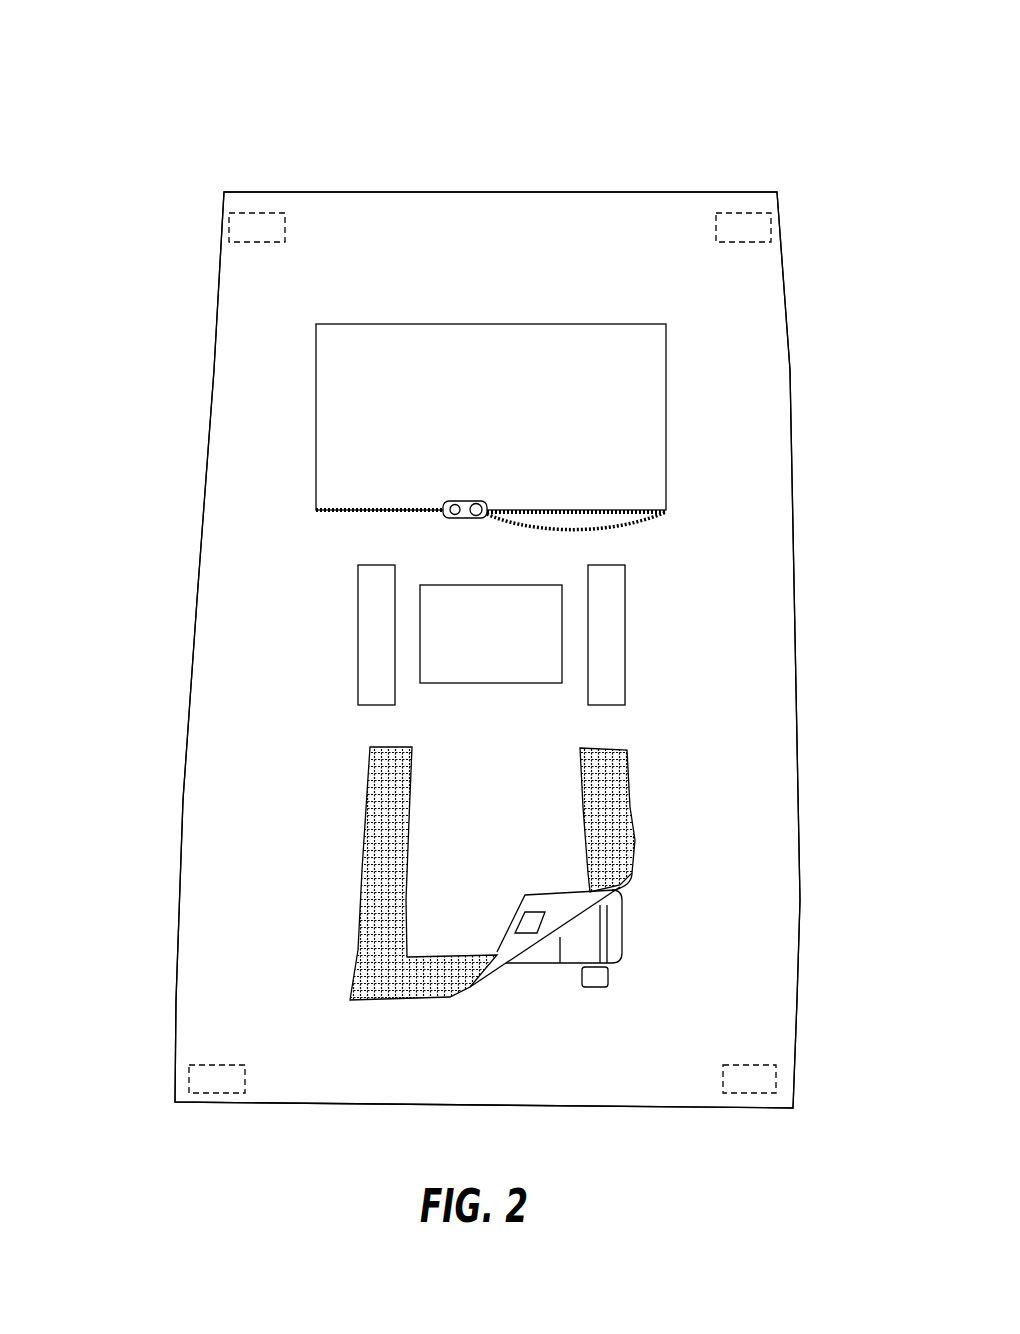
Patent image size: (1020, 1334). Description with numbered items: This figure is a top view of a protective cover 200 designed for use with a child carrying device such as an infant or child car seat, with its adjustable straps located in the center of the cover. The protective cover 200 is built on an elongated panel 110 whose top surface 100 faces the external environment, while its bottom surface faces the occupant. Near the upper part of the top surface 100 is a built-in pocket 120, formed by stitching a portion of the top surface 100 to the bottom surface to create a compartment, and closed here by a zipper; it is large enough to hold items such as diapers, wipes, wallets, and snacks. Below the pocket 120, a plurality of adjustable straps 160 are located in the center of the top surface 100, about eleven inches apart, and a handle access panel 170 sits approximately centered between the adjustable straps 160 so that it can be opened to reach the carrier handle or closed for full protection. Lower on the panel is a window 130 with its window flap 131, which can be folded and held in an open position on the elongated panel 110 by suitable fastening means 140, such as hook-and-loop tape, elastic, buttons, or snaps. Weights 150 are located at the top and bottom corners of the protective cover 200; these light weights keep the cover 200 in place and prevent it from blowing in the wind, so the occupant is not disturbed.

The protective cover 200 is at (482, 112).
The top surface 100 is at (777, 281).
The elongated panel 110 is at (172, 305).
The built-in pocket 120 is at (666, 440).
The window 130 is at (612, 913).
The window flap 131 is at (288, 869).
The fastening means 140 is at (597, 977).
The weights 150 is at (776, 1087).
The adjustable straps 160 is at (377, 628).
The handle access panel 170 is at (472, 683).